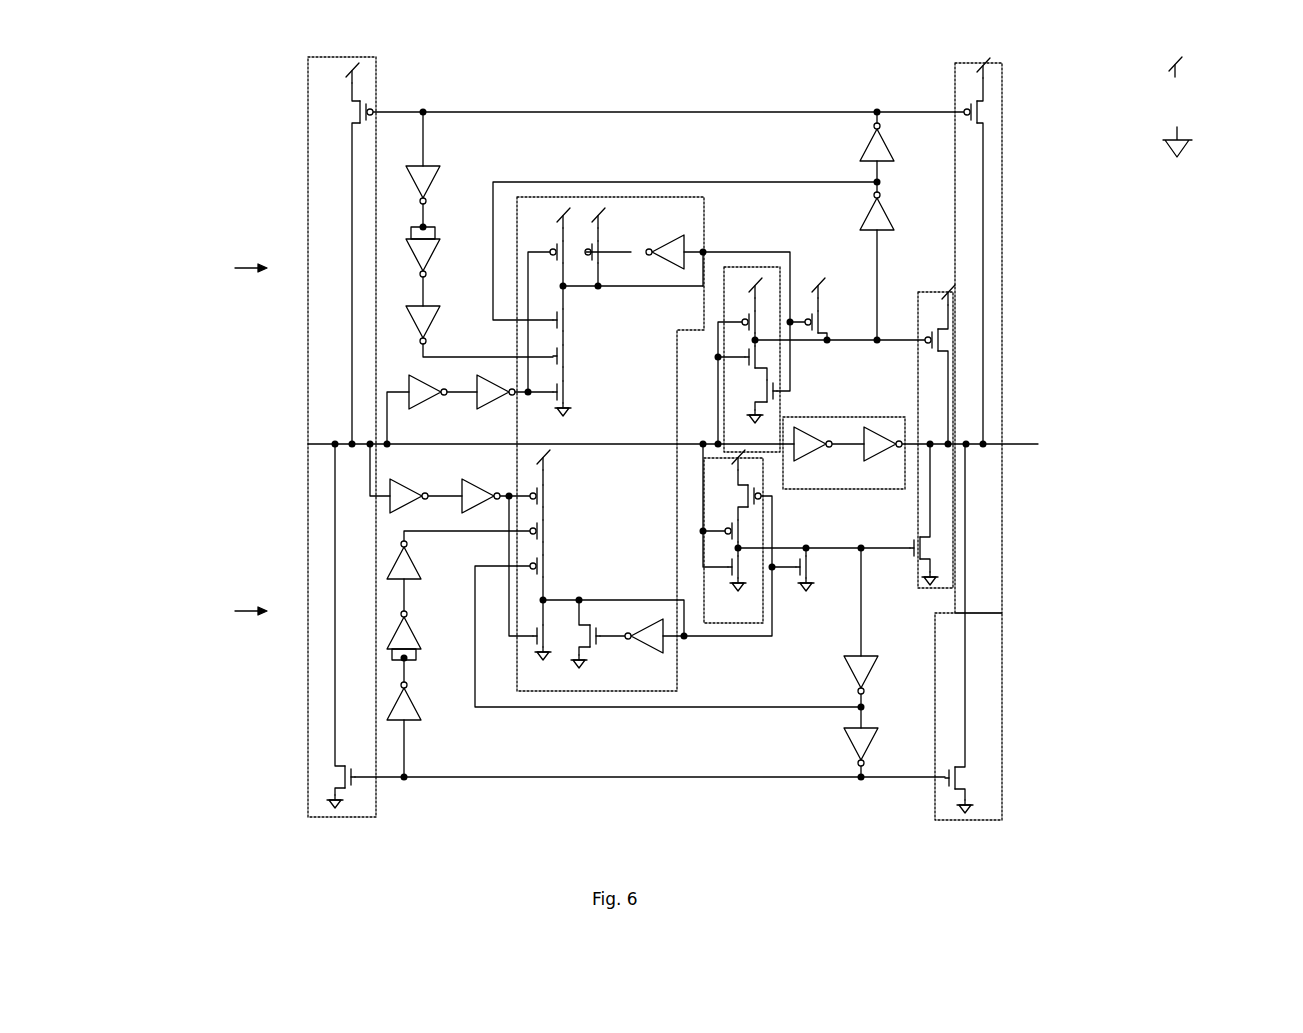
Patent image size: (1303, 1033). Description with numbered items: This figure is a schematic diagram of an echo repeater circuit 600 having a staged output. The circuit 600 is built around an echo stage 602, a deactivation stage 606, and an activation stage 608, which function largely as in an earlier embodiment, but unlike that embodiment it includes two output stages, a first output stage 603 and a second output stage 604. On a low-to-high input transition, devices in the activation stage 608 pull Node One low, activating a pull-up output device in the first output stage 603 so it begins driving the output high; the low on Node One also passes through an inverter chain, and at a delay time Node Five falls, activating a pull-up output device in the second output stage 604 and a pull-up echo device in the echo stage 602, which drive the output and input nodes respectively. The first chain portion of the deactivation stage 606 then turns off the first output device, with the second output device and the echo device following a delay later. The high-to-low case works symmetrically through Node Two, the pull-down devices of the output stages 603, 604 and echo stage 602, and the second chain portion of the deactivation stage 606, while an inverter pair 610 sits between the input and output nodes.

The echo repeater circuit 600 is at (217, 92).
The echo stage 602 is at (406, 892).
The first output stage 603 is at (950, 290).
The second output stage 604 is at (978, 822).
The deactivation stage 606 is at (540, 694).
The activation stage 608 is at (767, 686).
The inverter pair 610 is at (863, 488).